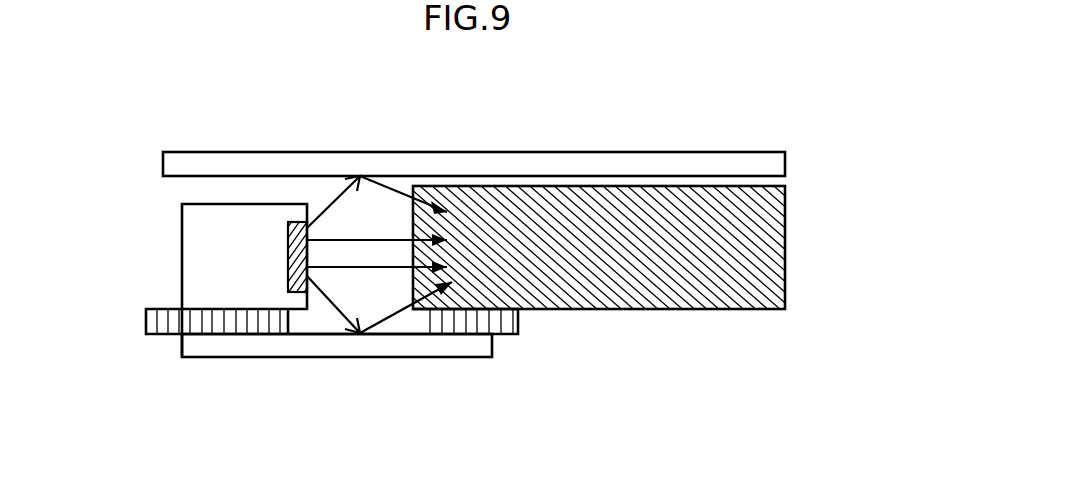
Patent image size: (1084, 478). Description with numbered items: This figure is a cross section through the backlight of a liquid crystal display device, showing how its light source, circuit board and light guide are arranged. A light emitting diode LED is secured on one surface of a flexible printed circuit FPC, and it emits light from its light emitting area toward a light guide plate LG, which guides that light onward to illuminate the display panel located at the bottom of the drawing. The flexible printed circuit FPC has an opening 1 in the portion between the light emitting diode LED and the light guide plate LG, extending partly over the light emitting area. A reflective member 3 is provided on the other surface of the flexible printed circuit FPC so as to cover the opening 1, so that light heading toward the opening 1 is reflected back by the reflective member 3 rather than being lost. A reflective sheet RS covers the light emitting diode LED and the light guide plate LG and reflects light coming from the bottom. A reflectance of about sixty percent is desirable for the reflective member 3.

The reflective sheet RS is at (668, 166).
The light guide plate LG is at (690, 247).
The light emitting diode LED is at (218, 259).
The opening 1 is at (310, 330).
The flexible printed circuit FPC is at (168, 322).
The reflective member 3 is at (415, 345).